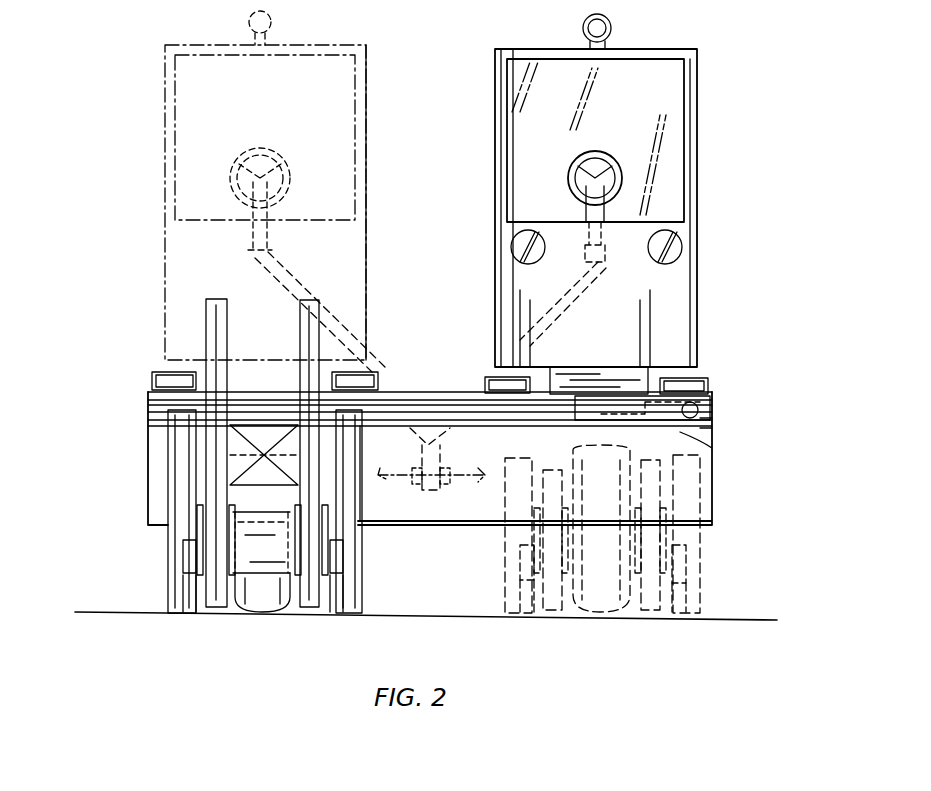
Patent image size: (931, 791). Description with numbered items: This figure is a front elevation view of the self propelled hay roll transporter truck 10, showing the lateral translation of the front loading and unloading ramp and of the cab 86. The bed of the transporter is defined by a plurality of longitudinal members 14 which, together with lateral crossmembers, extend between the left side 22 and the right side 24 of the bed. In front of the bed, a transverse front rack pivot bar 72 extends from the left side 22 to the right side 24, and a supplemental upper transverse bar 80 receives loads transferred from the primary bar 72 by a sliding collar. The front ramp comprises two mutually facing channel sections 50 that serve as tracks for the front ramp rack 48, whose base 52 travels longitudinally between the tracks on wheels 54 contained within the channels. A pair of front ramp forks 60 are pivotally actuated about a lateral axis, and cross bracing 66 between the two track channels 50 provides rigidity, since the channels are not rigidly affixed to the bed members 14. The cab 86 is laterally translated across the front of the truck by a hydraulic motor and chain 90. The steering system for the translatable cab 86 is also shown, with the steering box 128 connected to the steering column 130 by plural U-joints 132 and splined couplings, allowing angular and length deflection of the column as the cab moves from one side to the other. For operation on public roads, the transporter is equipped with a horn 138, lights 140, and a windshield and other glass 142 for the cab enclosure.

The self propelled hay roll transporter truck 10 is at (633, 682).
The longitudinal members 14 is at (155, 372).
The left side 22 is at (712, 396).
The right side 24 is at (152, 381).
The front ramp rack 48 is at (200, 615).
The channel sections 50 is at (183, 592).
The base 52 is at (431, 528).
The wheels 54 is at (183, 552).
The front ramp forks 60 is at (300, 325).
The cross bracing 66 is at (280, 450).
The transverse front rack pivot bar 72 is at (150, 425).
The supplemental upper transverse bar 80 is at (445, 405).
The cab 86 is at (494, 150).
The chain 90 is at (700, 405).
The steering box 128 is at (415, 497).
The steering column 130 is at (368, 372).
The U-joints 132 is at (248, 262).
The audible warning or signalling device (horn) 138 is at (272, 22).
The lights 140 is at (655, 237).
The windshield and other glass 142 is at (540, 110).